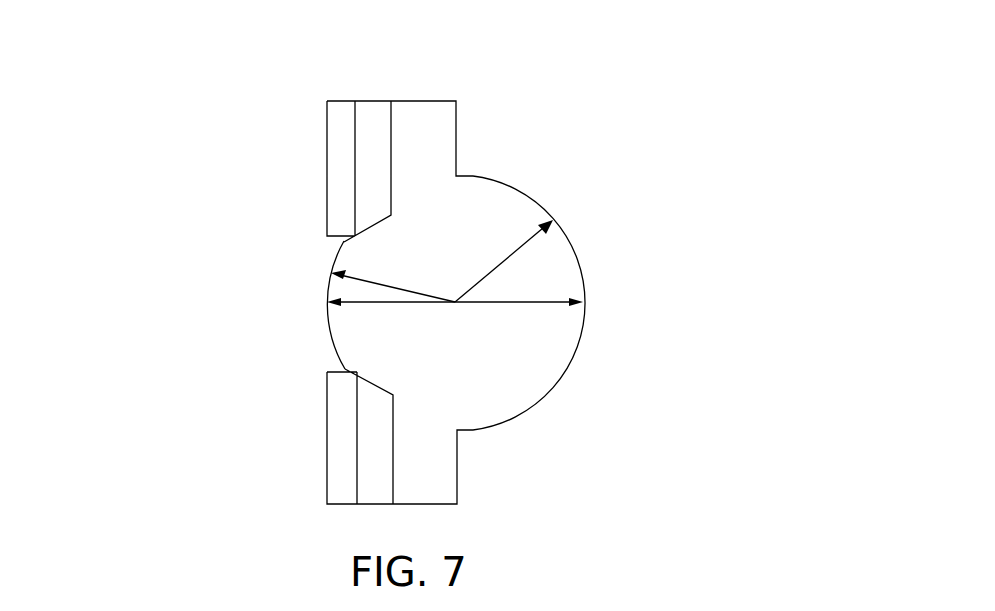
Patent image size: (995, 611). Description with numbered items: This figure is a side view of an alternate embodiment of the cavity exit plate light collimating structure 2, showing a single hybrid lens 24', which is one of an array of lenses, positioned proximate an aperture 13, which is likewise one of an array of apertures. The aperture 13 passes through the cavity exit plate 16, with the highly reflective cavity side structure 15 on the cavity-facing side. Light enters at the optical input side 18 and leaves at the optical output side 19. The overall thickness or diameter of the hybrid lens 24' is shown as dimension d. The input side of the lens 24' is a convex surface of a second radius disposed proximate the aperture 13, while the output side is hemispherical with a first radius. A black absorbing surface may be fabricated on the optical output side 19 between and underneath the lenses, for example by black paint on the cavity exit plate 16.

The cavity exit plate light collimating structure 2 is at (446, 70).
The aperture 13 is at (305, 290).
The highly reflective cavity side structure 15 is at (340, 136).
The cavity exit plate 16 is at (377, 477).
The optical input side 18 is at (200, 414).
The optical output side 19 is at (622, 410).
The hybrid lens 24' is at (583, 303).